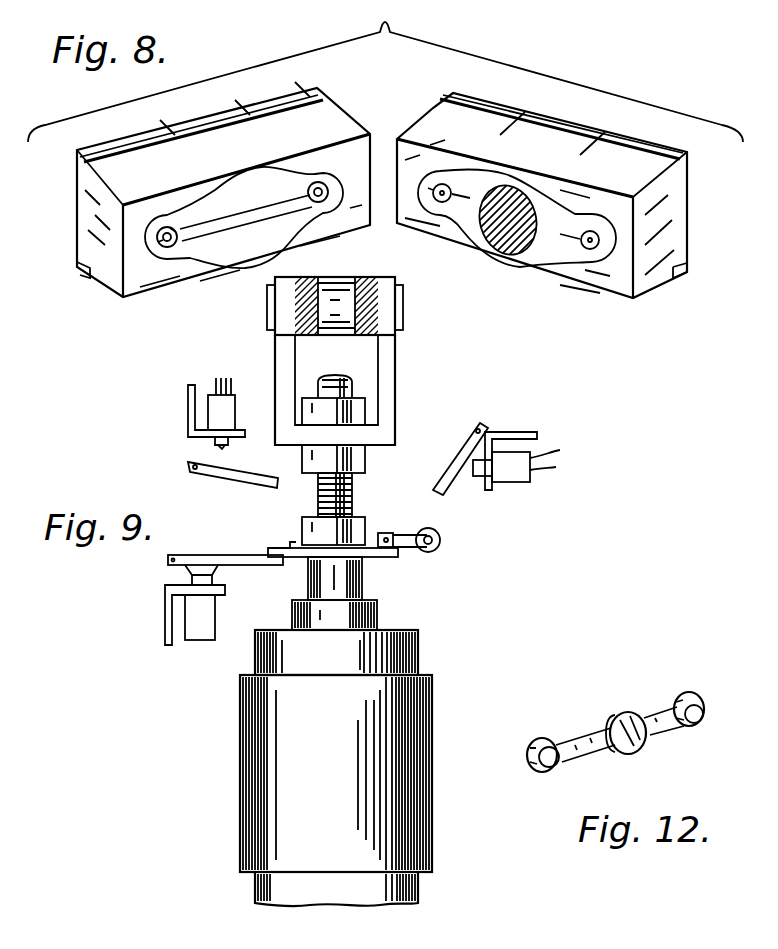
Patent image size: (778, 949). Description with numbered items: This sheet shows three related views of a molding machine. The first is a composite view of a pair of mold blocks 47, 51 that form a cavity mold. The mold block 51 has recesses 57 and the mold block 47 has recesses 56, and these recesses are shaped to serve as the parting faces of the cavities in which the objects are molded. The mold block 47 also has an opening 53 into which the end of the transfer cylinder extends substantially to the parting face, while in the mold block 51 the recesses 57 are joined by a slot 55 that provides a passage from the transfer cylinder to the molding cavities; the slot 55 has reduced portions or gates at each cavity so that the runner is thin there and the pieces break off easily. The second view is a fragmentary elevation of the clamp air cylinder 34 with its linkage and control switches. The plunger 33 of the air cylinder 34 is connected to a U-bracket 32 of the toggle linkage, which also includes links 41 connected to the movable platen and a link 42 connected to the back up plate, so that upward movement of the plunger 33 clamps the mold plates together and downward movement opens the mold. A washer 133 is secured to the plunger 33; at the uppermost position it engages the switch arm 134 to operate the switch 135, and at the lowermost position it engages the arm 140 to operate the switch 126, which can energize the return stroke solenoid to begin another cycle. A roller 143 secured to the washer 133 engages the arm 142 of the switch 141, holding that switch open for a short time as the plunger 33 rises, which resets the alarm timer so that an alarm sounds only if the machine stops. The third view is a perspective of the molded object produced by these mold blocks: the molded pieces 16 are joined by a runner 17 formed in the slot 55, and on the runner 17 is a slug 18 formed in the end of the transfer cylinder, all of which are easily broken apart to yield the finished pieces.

In FIG. 8, the mold block 51 is at (338, 125).
In FIG. 8, the slot 55 is at (222, 220).
In FIG. 8, the recesses 57 is at (167, 227).
In FIG. 8, the mold block 47 is at (620, 140).
In FIG. 8, the opening 53 is at (532, 210).
In FIG. 8, the recesses 56 is at (442, 184).
In FIG. 9, the links 41 is at (330, 332).
In FIG. 9, the link 42 is at (368, 337).
In FIG. 9, the U-bracket 32 is at (390, 405).
In FIG. 9, the switch 135 is at (230, 405).
In FIG. 9, the switch arm 134 is at (242, 480).
In FIG. 9, the arm 142 is at (440, 468).
In FIG. 9, the switch 141 is at (520, 478).
In FIG. 9, the washer 133 is at (290, 545).
In FIG. 9, the roller 143 is at (440, 540).
In FIG. 9, the arm 140 is at (262, 567).
In FIG. 9, the plunger 33 is at (362, 580).
In FIG. 9, the switch 126 is at (190, 632).
In FIG. 9, the air cylinder 34 is at (238, 752).
In FIG. 12, the molded pieces 16 is at (545, 771).
In FIG. 12, the runner 17 is at (660, 730).
In FIG. 12, the slug 18 is at (630, 752).